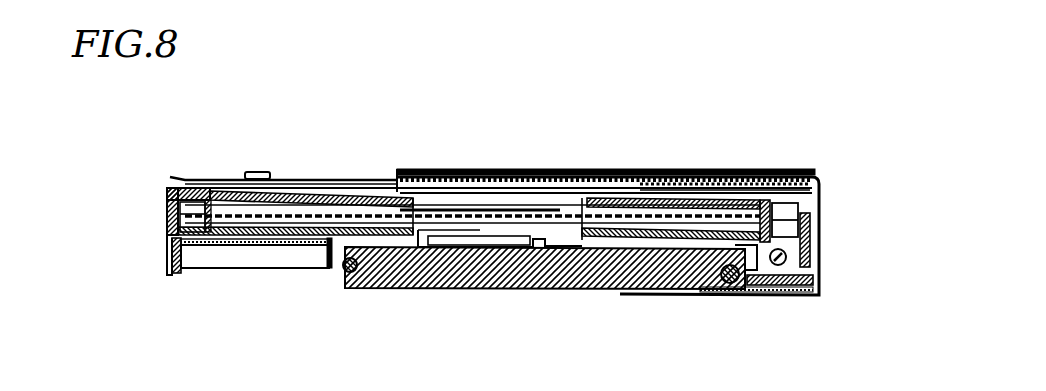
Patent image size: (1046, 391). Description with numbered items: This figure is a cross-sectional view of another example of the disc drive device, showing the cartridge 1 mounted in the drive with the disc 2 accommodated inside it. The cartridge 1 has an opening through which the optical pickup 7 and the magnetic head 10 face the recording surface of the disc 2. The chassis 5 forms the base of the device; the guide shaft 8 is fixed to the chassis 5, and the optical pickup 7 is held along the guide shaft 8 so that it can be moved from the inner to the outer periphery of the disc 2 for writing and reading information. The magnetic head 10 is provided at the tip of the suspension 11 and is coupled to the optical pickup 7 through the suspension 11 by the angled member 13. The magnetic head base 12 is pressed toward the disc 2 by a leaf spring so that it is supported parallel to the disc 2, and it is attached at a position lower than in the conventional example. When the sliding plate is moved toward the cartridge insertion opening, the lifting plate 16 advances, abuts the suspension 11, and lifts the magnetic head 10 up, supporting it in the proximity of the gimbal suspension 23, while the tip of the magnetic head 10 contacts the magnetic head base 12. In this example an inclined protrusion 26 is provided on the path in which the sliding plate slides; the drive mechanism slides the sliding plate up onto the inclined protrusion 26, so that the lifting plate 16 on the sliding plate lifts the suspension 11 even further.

The cartridge 1 is at (163, 198).
The disc 2 is at (233, 182).
The chassis 5 is at (235, 242).
The optical pickup 7 is at (525, 293).
The guide shaft 8 is at (618, 293).
The magnetic head 10 is at (437, 175).
The suspension 11 is at (583, 177).
The magnetic head base 12 is at (660, 177).
The angled member 13 is at (828, 213).
The lifting plate 16 is at (617, 177).
The gimbal suspension 23 is at (415, 198).
The inclined protrusion 26 is at (527, 177).